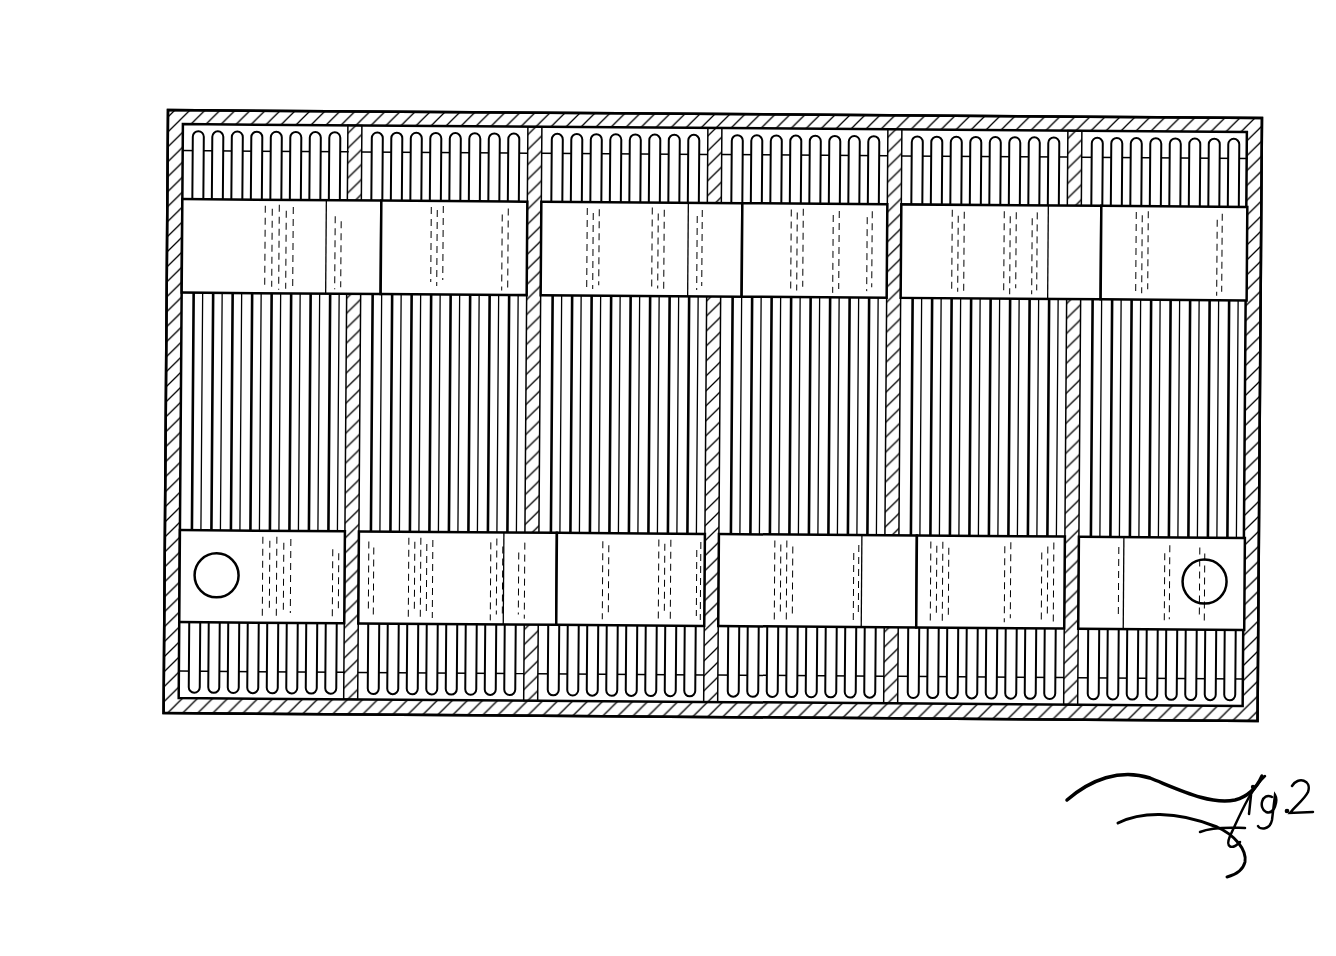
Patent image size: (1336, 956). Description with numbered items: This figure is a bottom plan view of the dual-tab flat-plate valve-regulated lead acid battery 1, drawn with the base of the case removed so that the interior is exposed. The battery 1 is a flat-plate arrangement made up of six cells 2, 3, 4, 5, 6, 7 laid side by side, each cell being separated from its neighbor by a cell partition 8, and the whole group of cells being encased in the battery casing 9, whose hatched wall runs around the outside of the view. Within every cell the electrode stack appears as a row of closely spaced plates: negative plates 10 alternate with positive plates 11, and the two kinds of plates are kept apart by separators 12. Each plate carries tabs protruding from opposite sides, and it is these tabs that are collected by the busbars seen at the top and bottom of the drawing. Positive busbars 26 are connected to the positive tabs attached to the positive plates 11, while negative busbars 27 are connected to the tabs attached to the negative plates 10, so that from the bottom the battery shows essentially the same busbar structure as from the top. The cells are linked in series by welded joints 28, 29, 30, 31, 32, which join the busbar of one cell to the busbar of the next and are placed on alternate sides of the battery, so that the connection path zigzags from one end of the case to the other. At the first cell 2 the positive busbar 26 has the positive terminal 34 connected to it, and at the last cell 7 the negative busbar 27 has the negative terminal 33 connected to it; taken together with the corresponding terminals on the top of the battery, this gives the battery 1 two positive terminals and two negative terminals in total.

The valve-regulated lead acid battery 1 is at (300, 47).
The cell 2 is at (314, 128).
The cell 3 is at (493, 128).
The cell 4 is at (677, 128).
The cell 5 is at (856, 128).
The cell 6 is at (1035, 128).
The cell 7 is at (1213, 128).
The cell partition 8 is at (362, 128).
The battery casing 9 is at (247, 113).
The negative plate 10 is at (343, 665).
The positive plate 11 is at (1182, 673).
The separator 12 is at (1013, 690).
The positive busbar 26 is at (455, 217).
The negative busbar 27 is at (195, 250).
The welded joint 28 is at (372, 213).
The welded joint 29 is at (550, 613).
The welded joint 30 is at (730, 228).
The welded joint 31 is at (903, 612).
The welded joint 32 is at (1093, 217).
The negative terminal 33 is at (1215, 583).
The positive terminal 34 is at (205, 572).